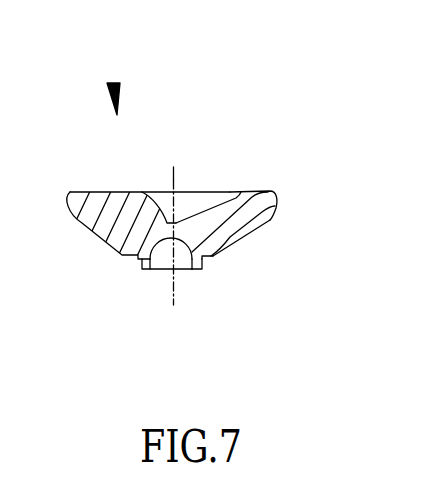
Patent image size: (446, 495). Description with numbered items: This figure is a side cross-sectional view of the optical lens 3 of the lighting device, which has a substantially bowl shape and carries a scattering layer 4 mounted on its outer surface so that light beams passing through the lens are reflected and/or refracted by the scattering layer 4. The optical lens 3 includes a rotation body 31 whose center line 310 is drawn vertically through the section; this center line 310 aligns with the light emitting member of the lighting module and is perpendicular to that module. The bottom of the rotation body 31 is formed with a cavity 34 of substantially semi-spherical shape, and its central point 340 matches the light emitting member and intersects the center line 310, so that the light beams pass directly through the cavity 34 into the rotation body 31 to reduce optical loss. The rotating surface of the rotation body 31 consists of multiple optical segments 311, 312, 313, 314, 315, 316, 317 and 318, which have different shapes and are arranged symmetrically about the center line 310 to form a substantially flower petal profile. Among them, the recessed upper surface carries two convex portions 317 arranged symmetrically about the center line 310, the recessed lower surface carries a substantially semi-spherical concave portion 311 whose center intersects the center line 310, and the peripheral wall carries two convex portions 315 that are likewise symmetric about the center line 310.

The optical lens 3 is at (113, 83).
The scattering layer 4 is at (108, 192).
The rotation body 31 is at (85, 210).
The cavity 34 is at (155, 260).
The center line 310 is at (174, 167).
The semi-spherical concave portion 311 is at (187, 269).
The optical segment 312 is at (204, 266).
The optical segment 313 is at (208, 259).
The optical segment 314 is at (210, 258).
The convex portion 315 is at (270, 221).
The optical segment 316 is at (273, 193).
The convex portion 317 is at (230, 193).
The optical segment 318 is at (176, 223).
The central point 340 is at (171, 269).